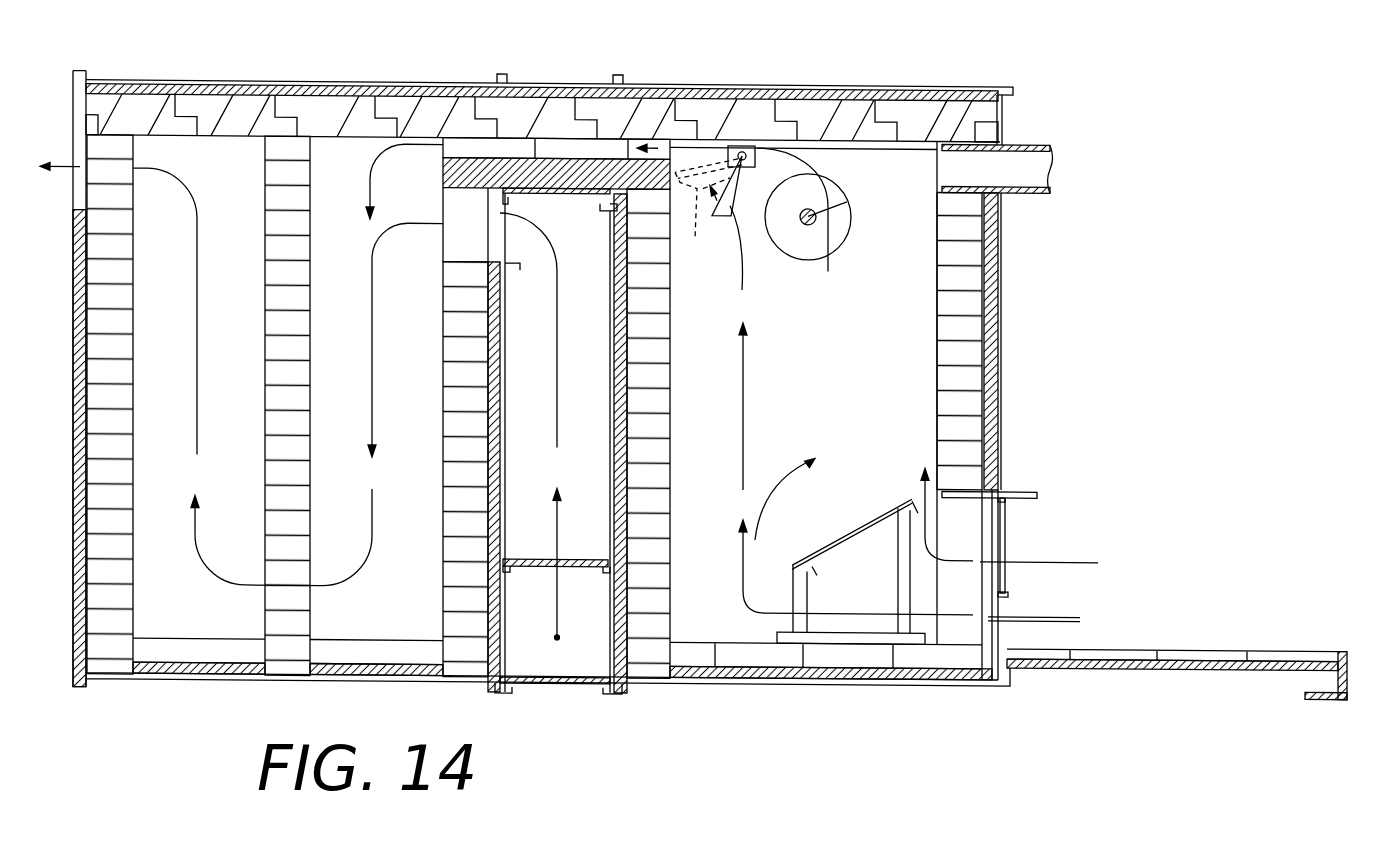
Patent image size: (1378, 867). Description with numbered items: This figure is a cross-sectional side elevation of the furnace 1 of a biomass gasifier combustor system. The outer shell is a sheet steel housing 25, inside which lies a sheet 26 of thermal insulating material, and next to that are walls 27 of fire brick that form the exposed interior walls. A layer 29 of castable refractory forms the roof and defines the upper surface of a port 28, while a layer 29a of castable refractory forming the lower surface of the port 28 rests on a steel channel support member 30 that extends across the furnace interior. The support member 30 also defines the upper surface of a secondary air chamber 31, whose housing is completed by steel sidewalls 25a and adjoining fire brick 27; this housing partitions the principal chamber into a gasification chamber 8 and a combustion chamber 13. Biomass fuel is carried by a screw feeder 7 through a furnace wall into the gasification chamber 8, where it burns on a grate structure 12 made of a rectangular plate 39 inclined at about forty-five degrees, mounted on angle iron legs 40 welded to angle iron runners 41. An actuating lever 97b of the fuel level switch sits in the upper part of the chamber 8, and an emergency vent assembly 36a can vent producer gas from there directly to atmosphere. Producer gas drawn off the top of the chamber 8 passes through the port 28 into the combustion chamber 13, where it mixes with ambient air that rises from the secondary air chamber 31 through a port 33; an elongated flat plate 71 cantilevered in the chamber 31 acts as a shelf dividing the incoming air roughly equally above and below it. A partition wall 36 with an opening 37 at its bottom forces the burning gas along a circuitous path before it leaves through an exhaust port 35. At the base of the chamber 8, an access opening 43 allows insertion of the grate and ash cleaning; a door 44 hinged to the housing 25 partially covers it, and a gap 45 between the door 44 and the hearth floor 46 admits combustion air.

The furnace 1 is at (745, 76).
The screw feeder 7 is at (797, 241).
The gasification chamber 8 is at (796, 362).
The grate structure 12 is at (842, 524).
The combustion chamber 13 is at (337, 155).
The housing 25 is at (990, 89).
The steel sidewalls 25a is at (517, 259).
The sheet of thermal insulating material 26 is at (985, 104).
The walls of fire brick 27 is at (948, 219).
The port 28 is at (507, 143).
The layer of castable refractory 29 is at (838, 110).
The layer of castable refractory 29a is at (404, 205).
The steel channel support member 30 is at (542, 193).
The secondary air chamber 31 is at (590, 477).
The port 33 is at (455, 238).
The exhaust port 35 is at (120, 187).
The partition wall 36 is at (312, 394).
The emergency vent assembly 36a is at (1036, 186).
The opening 37 is at (295, 595).
The rectangular plate 39 is at (913, 491).
The legs 40 is at (898, 580).
The angle iron runners 41 is at (777, 631).
The access opening 43 is at (963, 520).
The door 44 is at (1003, 543).
The gap 45 is at (988, 626).
The hearth floor 46 is at (1162, 638).
The elongated flat plate 71 is at (545, 552).
The actuating lever 97b is at (738, 224).